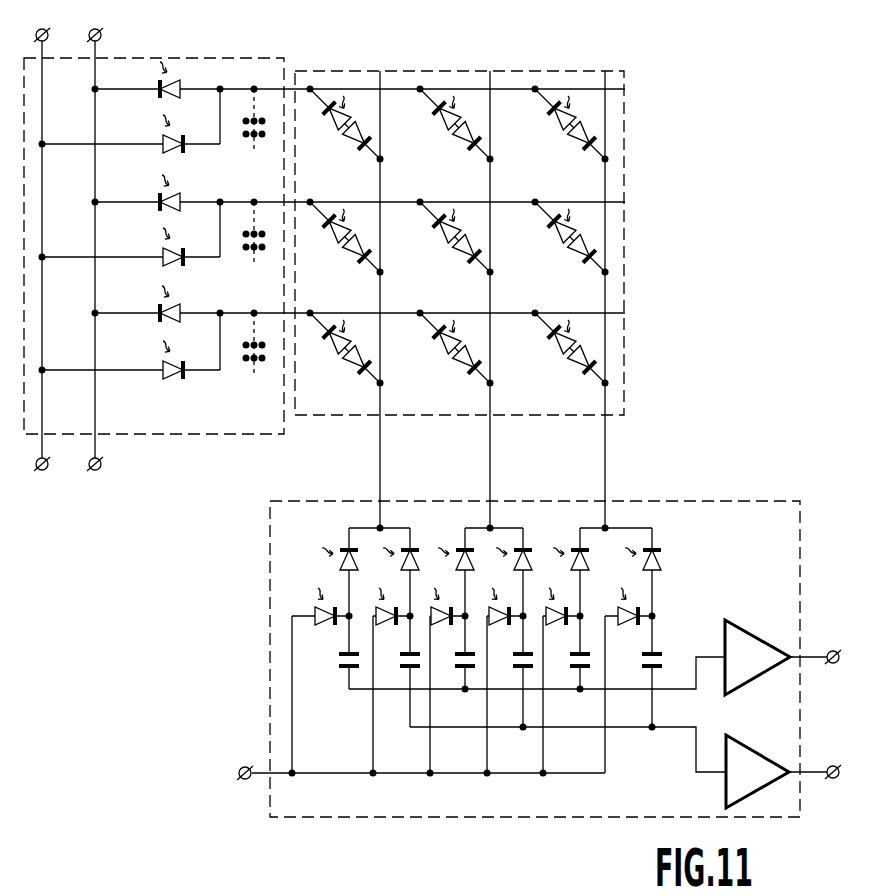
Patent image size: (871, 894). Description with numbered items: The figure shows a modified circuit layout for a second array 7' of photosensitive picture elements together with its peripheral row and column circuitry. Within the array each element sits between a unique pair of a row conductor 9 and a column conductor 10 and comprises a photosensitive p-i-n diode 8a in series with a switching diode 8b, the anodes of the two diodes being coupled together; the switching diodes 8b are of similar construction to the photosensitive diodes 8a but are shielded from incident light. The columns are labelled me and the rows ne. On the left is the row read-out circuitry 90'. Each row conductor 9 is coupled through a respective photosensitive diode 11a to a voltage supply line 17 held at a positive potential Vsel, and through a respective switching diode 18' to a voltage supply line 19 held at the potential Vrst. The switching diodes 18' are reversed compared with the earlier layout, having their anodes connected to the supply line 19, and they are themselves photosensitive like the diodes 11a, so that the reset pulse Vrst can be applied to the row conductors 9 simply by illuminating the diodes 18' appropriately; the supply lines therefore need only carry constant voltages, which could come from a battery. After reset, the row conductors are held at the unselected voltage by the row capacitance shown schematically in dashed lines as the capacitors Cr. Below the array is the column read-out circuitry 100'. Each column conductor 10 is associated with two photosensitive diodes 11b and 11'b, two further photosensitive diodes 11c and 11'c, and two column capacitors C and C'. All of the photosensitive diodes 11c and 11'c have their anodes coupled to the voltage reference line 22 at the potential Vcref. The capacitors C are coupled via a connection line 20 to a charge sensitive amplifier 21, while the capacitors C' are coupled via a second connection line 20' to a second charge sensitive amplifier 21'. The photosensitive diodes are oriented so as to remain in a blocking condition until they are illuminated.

The second array 7' is at (490, 243).
The photosensitive p-i-n diode 8a is at (343, 106).
The switching diode 8b is at (347, 142).
The row conductor 9 is at (625, 92).
The column conductor 10 is at (606, 238).
The photosensitive diode 11a is at (172, 79).
The photosensitive diode 11b is at (345, 547).
The photosensitive diode 11'b is at (543, 544).
The further photosensitive diode 11c is at (330, 624).
The photosensitive diode 11'c is at (533, 606).
The voltage supply line 17 is at (100, 455).
The switching diode 18' is at (159, 242).
The voltage supply line 19 is at (47, 455).
The connection line 20 is at (537, 671).
The connection line 20' is at (568, 748).
The charge sensitive amplifier 21 is at (783, 651).
The charge sensitive amplifier 21' is at (783, 765).
The reference potential supply line 22 is at (322, 776).
The row read-out circuitry 90' is at (154, 266).
The column read-out circuitry 100' is at (511, 659).
The capacitor C is at (457, 674).
The column capacitor C' is at (522, 666).
The row capacitance Cr is at (253, 378).
The column line me is at (494, 54).
The row line ne is at (642, 204).
The reset potential Vrst is at (44, 22).
The positive potential Vsel is at (105, 22).
The reference potential Vcref is at (216, 773).